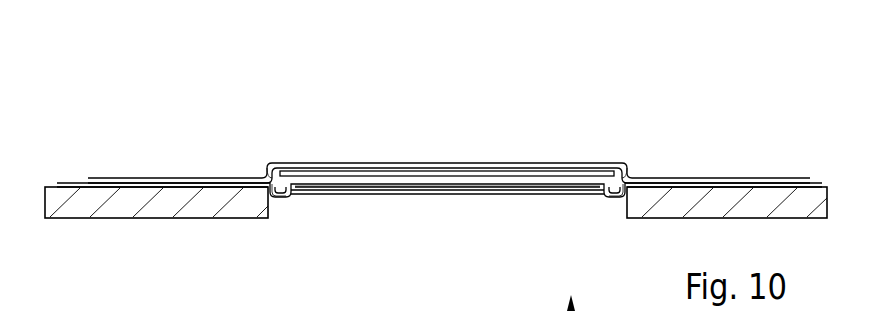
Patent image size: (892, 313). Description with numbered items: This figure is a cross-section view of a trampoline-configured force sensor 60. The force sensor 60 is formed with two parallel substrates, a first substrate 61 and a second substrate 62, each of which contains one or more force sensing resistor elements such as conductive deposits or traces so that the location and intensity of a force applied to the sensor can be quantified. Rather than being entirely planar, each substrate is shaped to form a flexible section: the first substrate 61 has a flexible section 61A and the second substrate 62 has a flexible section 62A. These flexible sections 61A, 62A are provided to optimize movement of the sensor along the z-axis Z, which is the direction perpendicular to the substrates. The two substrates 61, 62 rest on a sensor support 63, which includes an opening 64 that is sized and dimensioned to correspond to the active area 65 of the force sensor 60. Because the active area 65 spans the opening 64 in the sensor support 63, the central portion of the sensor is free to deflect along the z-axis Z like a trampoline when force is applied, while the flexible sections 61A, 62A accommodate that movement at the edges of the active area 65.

The force sensor 60 is at (98, 91).
The first substrate 61 is at (449, 147).
The flexible section of first substrate 61A is at (257, 159).
The second substrate 62 is at (439, 233).
The flexible section of second substrate 62A is at (288, 216).
The sensor support 63 is at (432, 235).
The opening 64 is at (426, 236).
The active area 65 is at (622, 150).
The z-axis Z is at (752, 70).